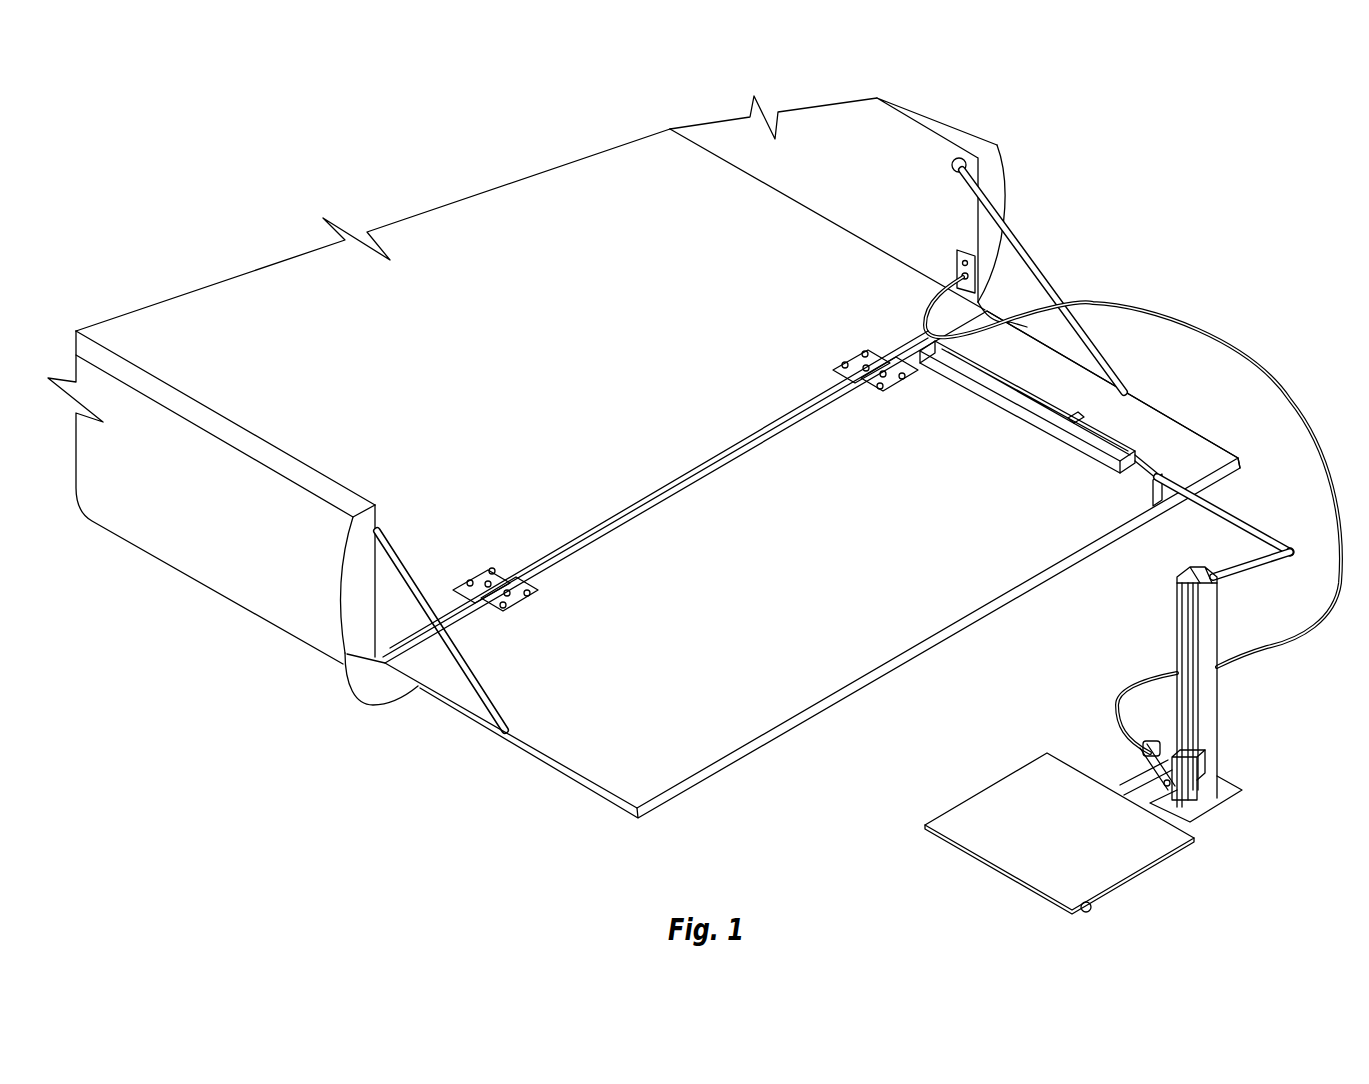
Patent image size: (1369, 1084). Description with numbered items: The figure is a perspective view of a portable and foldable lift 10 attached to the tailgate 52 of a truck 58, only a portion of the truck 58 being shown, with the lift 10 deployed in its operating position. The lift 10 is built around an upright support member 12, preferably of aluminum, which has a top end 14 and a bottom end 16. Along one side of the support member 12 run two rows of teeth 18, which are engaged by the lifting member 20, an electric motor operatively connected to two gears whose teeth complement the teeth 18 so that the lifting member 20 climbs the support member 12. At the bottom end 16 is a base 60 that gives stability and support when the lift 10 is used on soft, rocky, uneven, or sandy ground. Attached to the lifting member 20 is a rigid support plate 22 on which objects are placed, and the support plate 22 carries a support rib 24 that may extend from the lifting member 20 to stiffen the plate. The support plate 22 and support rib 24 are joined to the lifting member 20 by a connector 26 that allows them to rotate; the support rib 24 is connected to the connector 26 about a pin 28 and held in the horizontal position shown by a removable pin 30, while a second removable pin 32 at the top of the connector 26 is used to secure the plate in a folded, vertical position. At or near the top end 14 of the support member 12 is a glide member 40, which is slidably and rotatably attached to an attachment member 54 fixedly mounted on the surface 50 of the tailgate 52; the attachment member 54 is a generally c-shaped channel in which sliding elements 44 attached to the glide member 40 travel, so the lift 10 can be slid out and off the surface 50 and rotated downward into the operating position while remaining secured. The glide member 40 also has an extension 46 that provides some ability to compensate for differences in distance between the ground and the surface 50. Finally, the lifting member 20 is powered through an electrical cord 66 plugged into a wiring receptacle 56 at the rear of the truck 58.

The portable and foldable lift 10 is at (1173, 295).
The support member 12 is at (1217, 683).
The top end 14 is at (1187, 575).
The bottom end 16 is at (1207, 797).
The teeth 18 is at (1177, 655).
The lifting member 20 is at (1203, 773).
The support plate 22 is at (987, 798).
The support rib 24 is at (1082, 912).
The connector 26 is at (1142, 770).
The pin 28 is at (1167, 783).
The removable pin 30 is at (1170, 780).
The second removable pin 32 is at (1168, 753).
The glide member 40 is at (1255, 522).
The sliding elements 44 is at (1157, 473).
The extension 46 is at (1258, 575).
The surface 50 is at (859, 557).
The tailgate 52 is at (1170, 428).
The attachment member 54 is at (1010, 420).
The wiring receptacle 56 is at (957, 257).
The truck 58 is at (1003, 180).
The base 60 is at (1210, 797).
The electrical cord 66 is at (1267, 377).